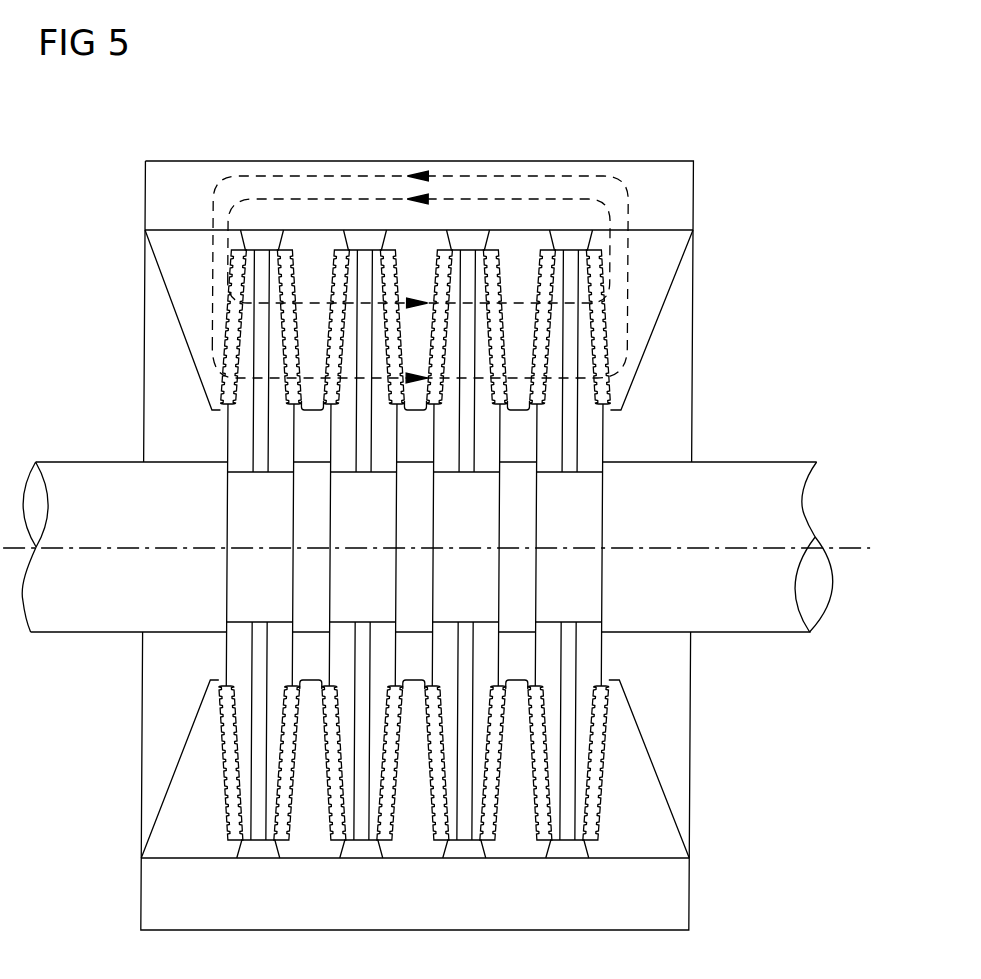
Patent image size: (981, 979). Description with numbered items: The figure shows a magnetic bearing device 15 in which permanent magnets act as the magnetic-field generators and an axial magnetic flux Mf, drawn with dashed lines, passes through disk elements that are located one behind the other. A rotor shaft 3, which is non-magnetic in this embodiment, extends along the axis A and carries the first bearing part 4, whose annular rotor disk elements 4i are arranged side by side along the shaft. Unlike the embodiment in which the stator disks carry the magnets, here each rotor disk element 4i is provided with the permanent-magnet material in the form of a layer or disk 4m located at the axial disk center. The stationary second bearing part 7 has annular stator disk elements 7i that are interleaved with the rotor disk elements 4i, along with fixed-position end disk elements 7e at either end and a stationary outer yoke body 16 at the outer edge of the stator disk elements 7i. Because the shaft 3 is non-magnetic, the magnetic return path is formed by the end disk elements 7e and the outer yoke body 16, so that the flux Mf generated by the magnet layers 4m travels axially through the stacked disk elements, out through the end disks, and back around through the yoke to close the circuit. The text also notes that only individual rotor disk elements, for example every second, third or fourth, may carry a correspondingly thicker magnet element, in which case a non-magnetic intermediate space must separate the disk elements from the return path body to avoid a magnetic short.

The stationary outer yoke body 16 is at (147, 184).
The magnetic bearing device 15 is at (105, 790).
The second bearing part 7 is at (393, 544).
The end disk elements 7e is at (183, 303).
The stator disk elements 7i is at (517, 400).
The first bearing part 4 is at (424, 545).
The rotor disk elements 4i is at (591, 647).
The permanent-magnet layers or disks 4m is at (263, 424).
The rotor shaft 3 is at (822, 603).
The axis A is at (846, 548).
The magnetic flux Mf is at (498, 176).